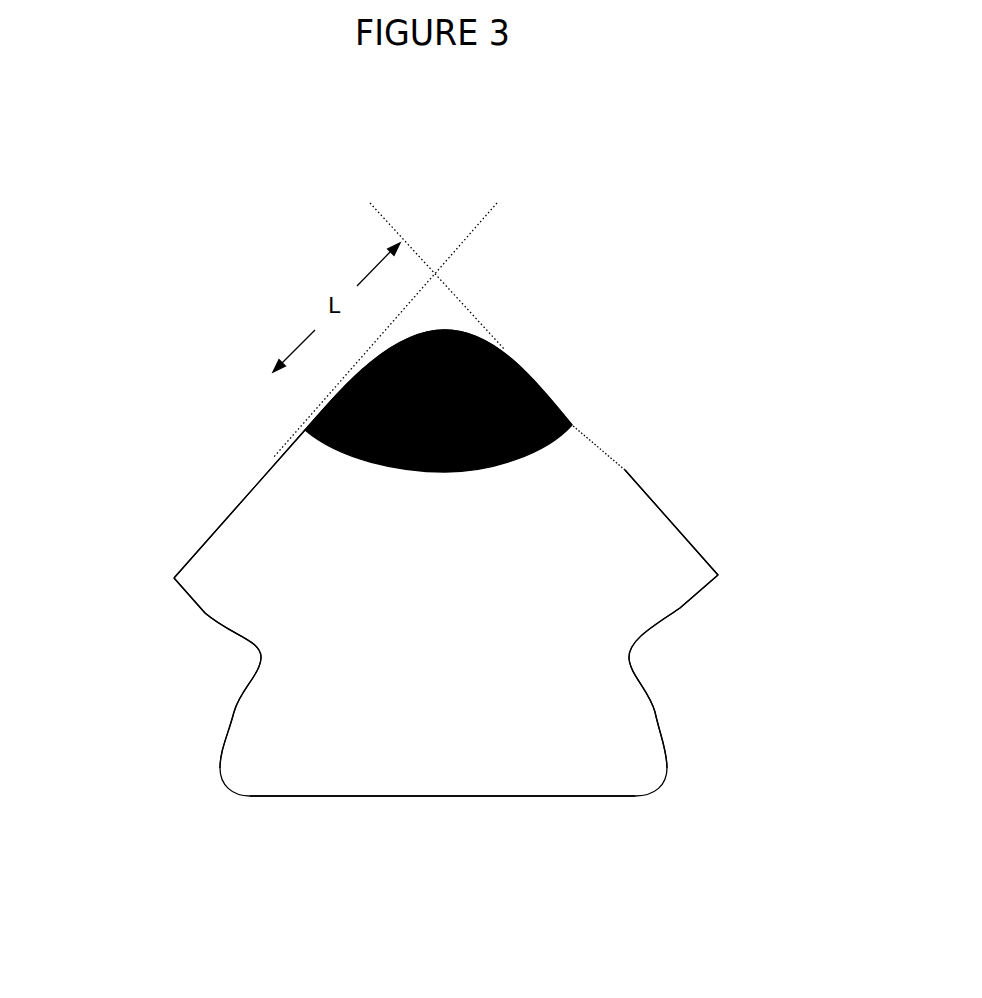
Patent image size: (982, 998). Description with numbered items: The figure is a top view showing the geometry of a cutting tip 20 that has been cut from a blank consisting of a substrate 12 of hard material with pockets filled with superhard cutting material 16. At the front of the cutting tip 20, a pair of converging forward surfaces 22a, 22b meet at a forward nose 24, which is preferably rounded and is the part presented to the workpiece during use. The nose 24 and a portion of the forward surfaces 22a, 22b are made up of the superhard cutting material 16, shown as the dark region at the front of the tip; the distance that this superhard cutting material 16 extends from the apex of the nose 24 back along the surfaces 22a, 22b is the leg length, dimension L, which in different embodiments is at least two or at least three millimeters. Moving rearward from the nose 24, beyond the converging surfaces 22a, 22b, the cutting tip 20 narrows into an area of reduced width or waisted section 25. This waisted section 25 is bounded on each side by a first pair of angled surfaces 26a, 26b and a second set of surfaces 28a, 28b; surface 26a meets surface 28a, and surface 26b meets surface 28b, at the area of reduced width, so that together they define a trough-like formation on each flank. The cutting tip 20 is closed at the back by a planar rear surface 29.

The substrate 12 is at (491, 721).
The superhard cutting material 16 is at (540, 355).
The cutting tip 20 is at (220, 811).
The forward surface 22a is at (245, 497).
The forward surface 22b is at (632, 478).
The forward nose 24 is at (443, 328).
The waisted section 25 is at (185, 656).
The angled surface 26a is at (205, 613).
The angled surface 26b is at (678, 608).
The second surface 28a is at (235, 710).
The second surface 28b is at (665, 720).
The planar rear surface 29 is at (348, 793).